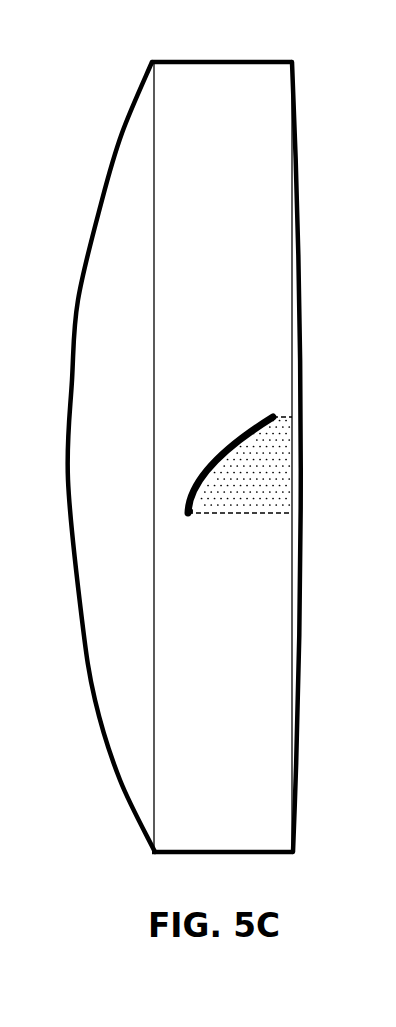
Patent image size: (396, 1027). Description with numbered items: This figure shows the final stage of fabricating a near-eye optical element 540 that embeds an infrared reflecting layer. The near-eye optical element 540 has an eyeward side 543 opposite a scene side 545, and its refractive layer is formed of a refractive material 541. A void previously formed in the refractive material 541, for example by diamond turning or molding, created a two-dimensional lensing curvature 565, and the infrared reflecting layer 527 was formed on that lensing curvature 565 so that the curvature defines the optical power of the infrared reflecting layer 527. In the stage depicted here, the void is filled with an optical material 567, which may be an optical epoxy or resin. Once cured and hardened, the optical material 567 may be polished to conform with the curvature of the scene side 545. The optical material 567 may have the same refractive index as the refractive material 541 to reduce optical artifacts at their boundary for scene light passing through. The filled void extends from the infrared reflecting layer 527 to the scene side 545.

The near-eye optical element 540 is at (210, 436).
The refractive material 541 is at (204, 99).
The eyeward side 543 is at (108, 140).
The scene side 545 is at (316, 265).
The lensing curvature 565 is at (247, 408).
The optical material 567 is at (280, 483).
The infrared reflecting layer 527 is at (189, 530).